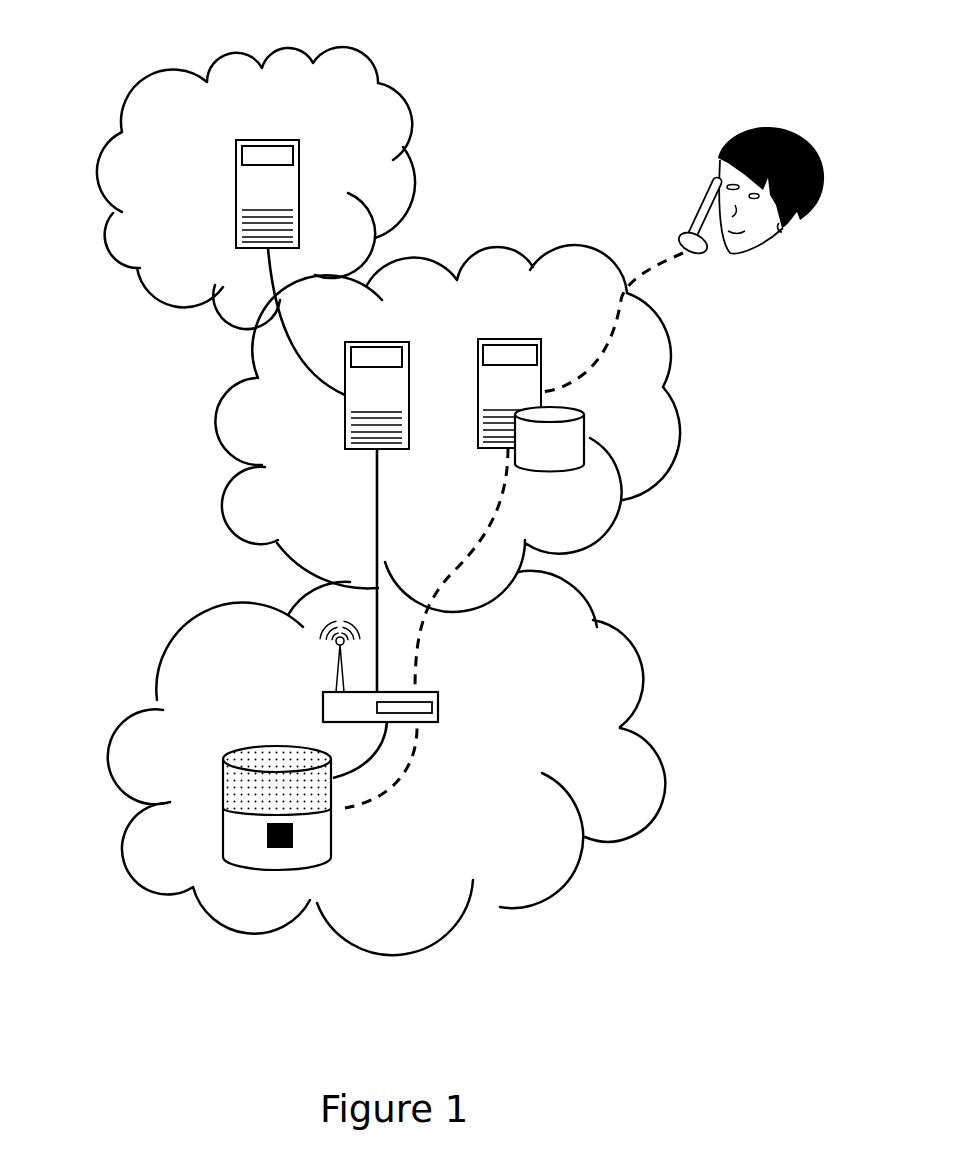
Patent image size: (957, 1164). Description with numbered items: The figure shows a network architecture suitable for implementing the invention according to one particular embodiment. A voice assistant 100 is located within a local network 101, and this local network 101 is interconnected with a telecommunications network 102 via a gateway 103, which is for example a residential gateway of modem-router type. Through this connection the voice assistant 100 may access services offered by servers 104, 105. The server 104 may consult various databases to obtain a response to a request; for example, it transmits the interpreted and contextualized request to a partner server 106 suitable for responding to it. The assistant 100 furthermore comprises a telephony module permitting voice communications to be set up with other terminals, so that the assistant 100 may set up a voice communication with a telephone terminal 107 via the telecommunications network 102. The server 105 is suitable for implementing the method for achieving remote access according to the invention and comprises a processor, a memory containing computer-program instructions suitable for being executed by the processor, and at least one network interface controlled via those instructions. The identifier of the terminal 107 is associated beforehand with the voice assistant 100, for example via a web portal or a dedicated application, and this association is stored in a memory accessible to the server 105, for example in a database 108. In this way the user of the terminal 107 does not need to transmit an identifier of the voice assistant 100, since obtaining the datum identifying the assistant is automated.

The voice assistant 100 is at (241, 747).
The local network 101 is at (231, 598).
The telecommunications network 102 is at (215, 59).
The gateway 103 is at (333, 690).
The server 104 is at (383, 341).
The server 105 is at (530, 339).
The partner server 106 is at (275, 140).
The telephone terminal 107 is at (712, 180).
The database 108 is at (665, 373).